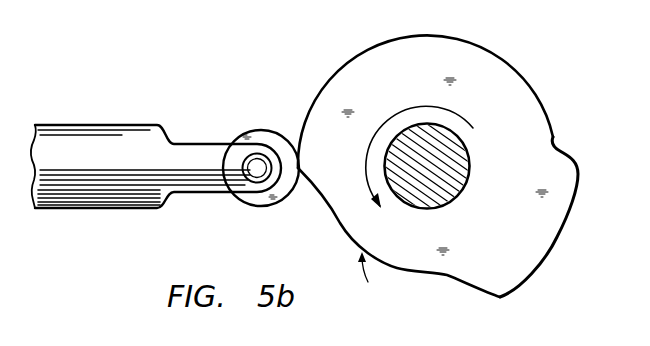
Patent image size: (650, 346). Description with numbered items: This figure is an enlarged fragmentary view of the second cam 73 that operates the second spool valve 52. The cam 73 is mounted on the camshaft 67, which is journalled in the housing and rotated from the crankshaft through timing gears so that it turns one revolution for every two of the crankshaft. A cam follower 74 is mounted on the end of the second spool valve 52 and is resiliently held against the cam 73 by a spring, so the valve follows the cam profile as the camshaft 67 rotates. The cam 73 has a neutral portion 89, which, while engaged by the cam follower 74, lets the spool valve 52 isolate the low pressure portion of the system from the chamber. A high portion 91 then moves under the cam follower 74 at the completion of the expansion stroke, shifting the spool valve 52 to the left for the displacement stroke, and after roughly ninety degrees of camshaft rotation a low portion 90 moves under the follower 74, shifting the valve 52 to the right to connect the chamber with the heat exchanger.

The second spool valve 52 is at (134, 127).
The cam follower 74 is at (247, 207).
The neutral portion 89 is at (331, 82).
The camshaft 67 is at (470, 163).
The high portion 91 is at (579, 186).
The low portion 90 is at (344, 232).
The second cam 73 is at (376, 274).